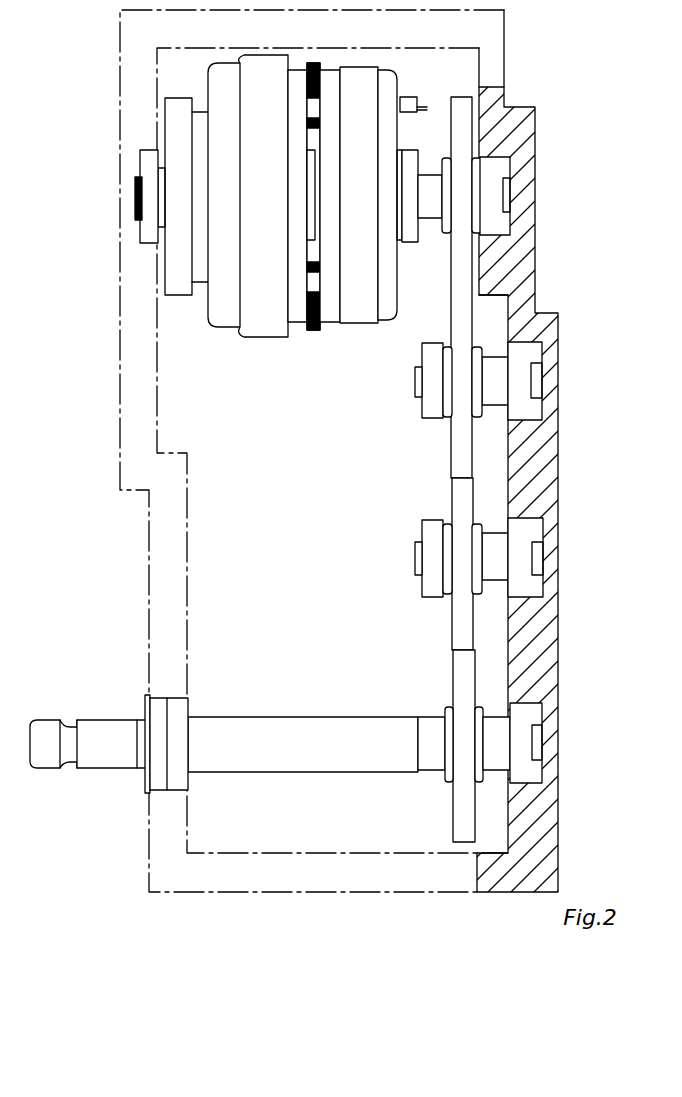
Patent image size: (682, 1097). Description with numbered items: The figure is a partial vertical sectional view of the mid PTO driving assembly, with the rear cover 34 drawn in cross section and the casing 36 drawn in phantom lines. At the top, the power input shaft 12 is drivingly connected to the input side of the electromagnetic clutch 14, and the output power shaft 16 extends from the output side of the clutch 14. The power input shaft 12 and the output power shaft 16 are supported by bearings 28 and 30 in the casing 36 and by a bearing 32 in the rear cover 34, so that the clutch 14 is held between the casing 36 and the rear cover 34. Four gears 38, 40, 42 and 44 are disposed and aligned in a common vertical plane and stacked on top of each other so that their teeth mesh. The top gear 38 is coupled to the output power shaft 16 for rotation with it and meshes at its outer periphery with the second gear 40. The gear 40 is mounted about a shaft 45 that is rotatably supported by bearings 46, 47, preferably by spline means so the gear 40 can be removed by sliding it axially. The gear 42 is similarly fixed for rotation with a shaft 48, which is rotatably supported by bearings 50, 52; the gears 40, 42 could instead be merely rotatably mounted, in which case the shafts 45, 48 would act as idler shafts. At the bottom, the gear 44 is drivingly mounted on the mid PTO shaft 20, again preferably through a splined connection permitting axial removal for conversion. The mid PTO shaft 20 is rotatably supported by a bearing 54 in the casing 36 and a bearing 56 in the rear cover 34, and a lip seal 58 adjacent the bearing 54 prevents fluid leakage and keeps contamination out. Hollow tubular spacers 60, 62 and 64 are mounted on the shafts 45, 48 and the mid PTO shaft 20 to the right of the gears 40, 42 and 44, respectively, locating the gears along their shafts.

The power input shaft 12 is at (163, 168).
The electromagnetic clutch 14 is at (250, 333).
The output power shaft 16 is at (430, 175).
The mid PTO shaft 20 is at (112, 730).
The bearing 28 is at (150, 243).
The bearing 30 is at (412, 148).
The bearing 32 is at (498, 170).
The rear cover 34 is at (536, 236).
The casing 36 is at (334, 892).
The gear 38 is at (455, 270).
The gear 40 is at (476, 323).
The gear 42 is at (470, 498).
The gear 44 is at (458, 677).
The shaft 45 is at (415, 378).
The bearing 46 is at (422, 416).
The bearing 47 is at (523, 407).
The shaft 48 is at (418, 558).
The bearing 50 is at (432, 517).
The bearing 52 is at (530, 577).
The bearing 54 is at (177, 792).
The bearing 56 is at (530, 770).
The lip seal 58 is at (153, 792).
The hollow tubular spacer 60 is at (495, 357).
The hollow tubular spacer 62 is at (493, 583).
The hollow tubular spacer 64 is at (495, 773).